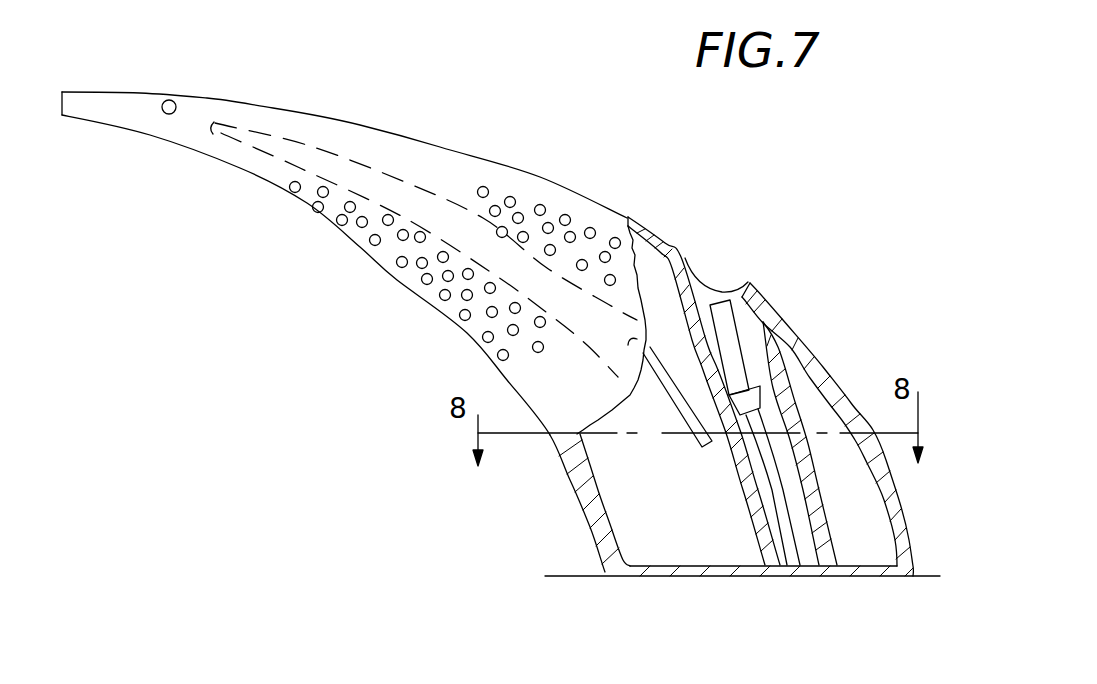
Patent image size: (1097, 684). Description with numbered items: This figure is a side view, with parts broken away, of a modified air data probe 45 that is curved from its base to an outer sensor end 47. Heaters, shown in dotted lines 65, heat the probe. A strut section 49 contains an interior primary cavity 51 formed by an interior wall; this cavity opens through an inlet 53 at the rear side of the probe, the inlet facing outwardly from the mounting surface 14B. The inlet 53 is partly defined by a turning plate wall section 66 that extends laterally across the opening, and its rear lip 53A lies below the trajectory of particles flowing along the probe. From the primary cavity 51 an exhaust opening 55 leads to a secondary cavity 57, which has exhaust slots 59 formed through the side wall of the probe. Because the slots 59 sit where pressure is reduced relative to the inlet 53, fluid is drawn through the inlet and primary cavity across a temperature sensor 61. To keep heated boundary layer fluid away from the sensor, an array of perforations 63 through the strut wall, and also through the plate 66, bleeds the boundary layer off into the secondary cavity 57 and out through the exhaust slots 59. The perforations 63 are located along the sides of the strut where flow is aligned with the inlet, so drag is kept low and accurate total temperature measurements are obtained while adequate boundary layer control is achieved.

The probe 45 is at (424, 318).
The outer sensor end 47 is at (150, 137).
The heaters 65 is at (364, 162).
The perforations 63 is at (509, 196).
The turning plate wall section 66 is at (685, 255).
The interior primary cavity 51 is at (712, 291).
The inlet 53 is at (703, 312).
The rear lip 53A is at (750, 283).
The temperature sensor 61 is at (735, 349).
The exhaust opening 55 is at (733, 478).
The exhaust slots 59 is at (682, 410).
The strut section 49 is at (573, 477).
The secondary cavity 57 is at (691, 540).
The mounting surface 14B is at (555, 574).